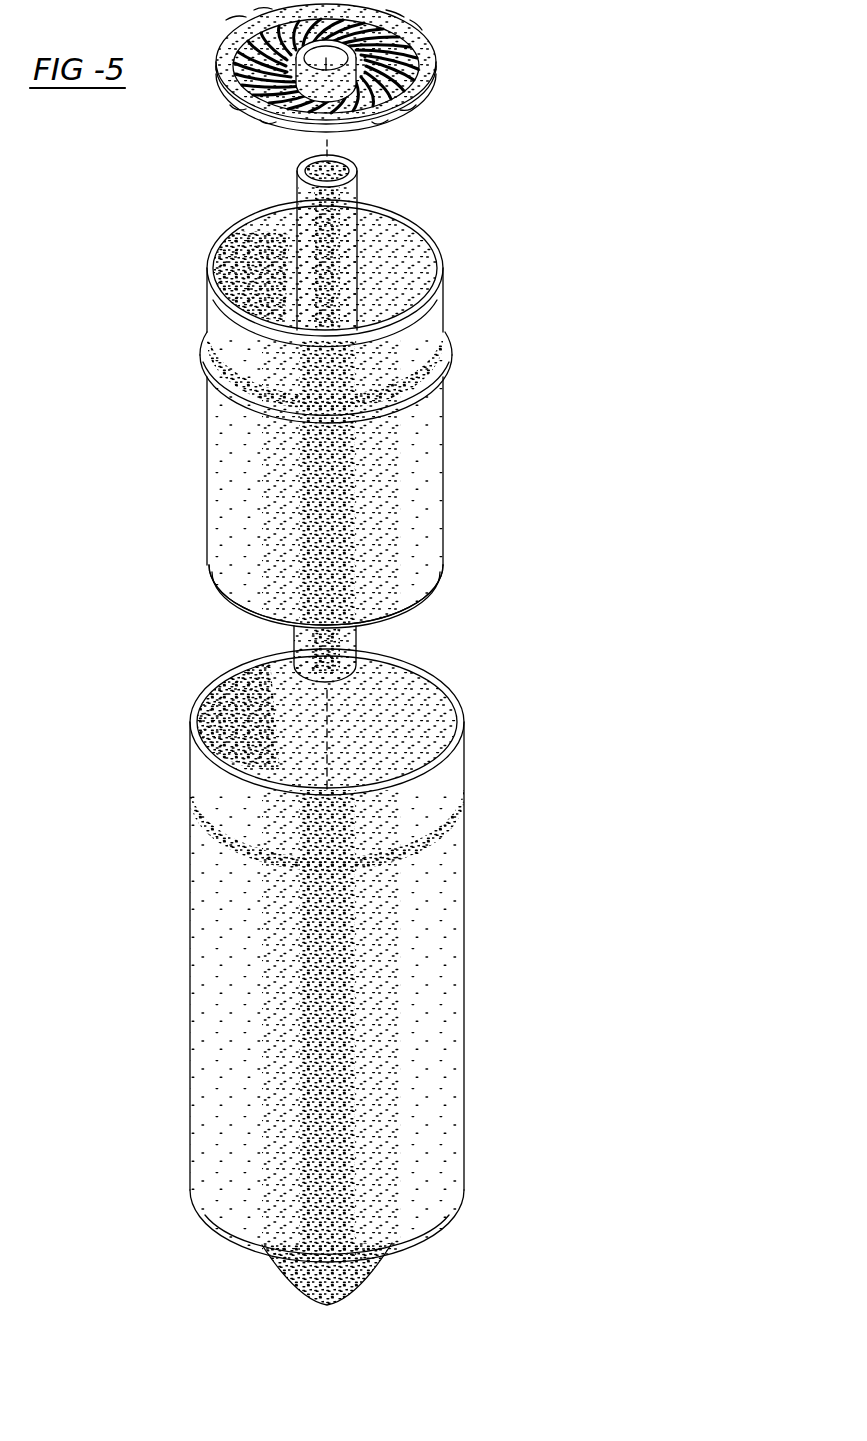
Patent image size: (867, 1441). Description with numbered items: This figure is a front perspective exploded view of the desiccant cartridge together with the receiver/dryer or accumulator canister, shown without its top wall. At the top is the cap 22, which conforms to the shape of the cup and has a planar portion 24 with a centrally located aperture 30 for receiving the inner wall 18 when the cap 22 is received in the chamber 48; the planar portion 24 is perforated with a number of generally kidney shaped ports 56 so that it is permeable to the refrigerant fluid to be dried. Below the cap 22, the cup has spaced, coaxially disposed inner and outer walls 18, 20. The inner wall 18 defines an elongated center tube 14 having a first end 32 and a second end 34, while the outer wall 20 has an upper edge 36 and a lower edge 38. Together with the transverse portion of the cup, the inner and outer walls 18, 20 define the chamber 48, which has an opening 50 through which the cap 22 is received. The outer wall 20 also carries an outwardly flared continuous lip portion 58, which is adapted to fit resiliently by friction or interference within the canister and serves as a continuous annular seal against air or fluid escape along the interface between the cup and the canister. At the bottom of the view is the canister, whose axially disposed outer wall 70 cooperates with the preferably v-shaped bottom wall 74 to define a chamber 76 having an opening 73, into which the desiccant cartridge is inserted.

The center tube 14 is at (334, 176).
The inner wall 18 is at (300, 173).
The outer wall 20 is at (425, 452).
The cap 22 is at (452, 51).
The planar portion 24 is at (394, 50).
The aperture 30 is at (250, 40).
The first end 32 is at (359, 190).
The second end 34 is at (358, 645).
The upper edge 36 is at (212, 259).
The lower edge 38 is at (440, 570).
The chamber 48 is at (414, 259).
The opening 50 is at (417, 267).
The ports 56 is at (410, 78).
The flared lip portion 58 is at (450, 365).
The outer wall 70 is at (465, 703).
The opening 73 is at (242, 690).
The bottom wall 74 is at (398, 1282).
The chamber 76 is at (429, 707).